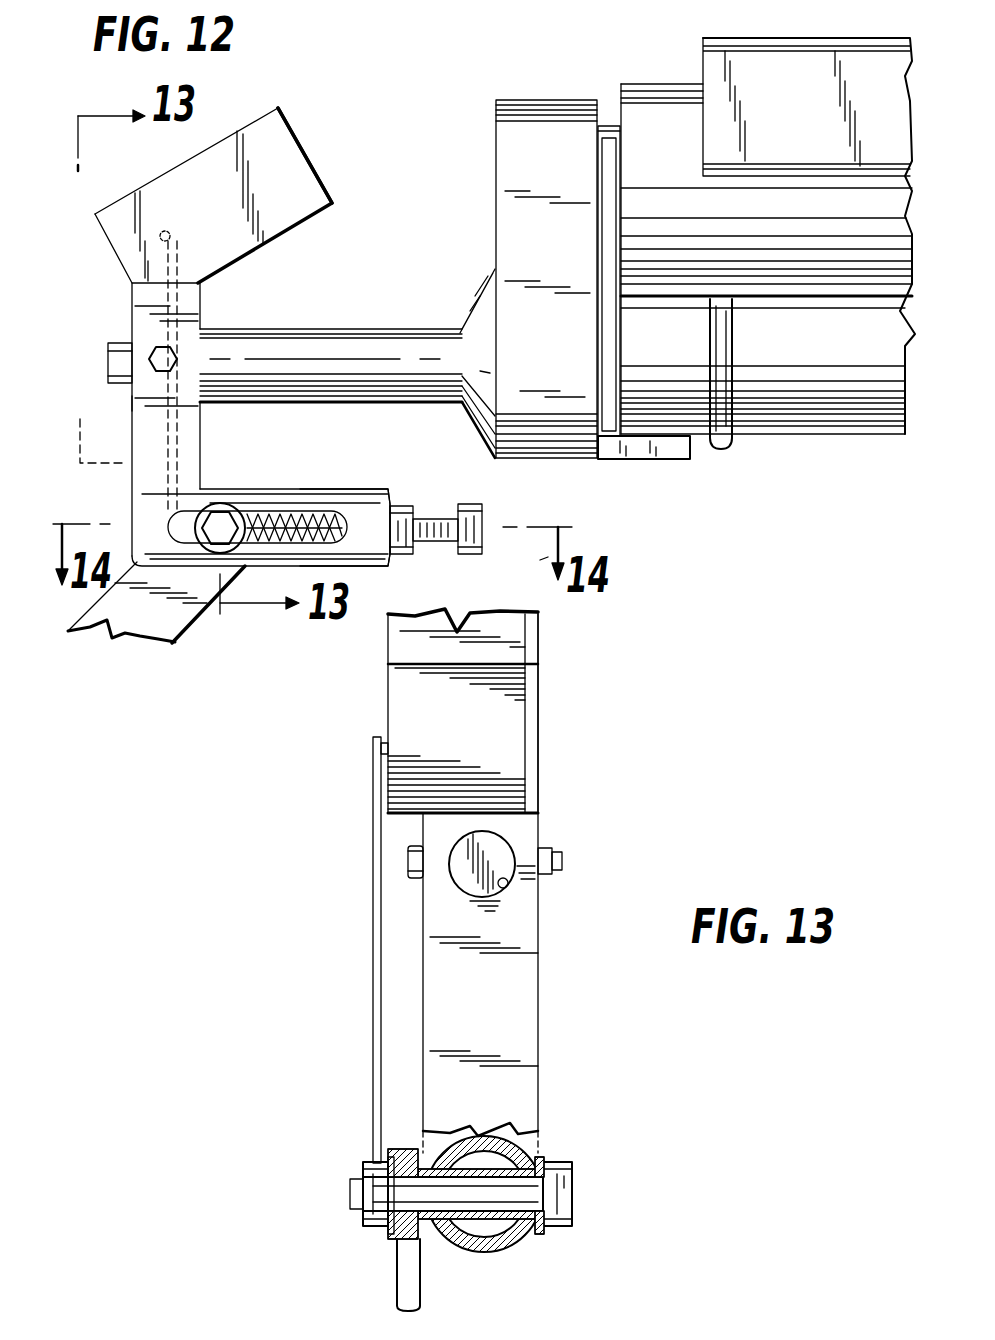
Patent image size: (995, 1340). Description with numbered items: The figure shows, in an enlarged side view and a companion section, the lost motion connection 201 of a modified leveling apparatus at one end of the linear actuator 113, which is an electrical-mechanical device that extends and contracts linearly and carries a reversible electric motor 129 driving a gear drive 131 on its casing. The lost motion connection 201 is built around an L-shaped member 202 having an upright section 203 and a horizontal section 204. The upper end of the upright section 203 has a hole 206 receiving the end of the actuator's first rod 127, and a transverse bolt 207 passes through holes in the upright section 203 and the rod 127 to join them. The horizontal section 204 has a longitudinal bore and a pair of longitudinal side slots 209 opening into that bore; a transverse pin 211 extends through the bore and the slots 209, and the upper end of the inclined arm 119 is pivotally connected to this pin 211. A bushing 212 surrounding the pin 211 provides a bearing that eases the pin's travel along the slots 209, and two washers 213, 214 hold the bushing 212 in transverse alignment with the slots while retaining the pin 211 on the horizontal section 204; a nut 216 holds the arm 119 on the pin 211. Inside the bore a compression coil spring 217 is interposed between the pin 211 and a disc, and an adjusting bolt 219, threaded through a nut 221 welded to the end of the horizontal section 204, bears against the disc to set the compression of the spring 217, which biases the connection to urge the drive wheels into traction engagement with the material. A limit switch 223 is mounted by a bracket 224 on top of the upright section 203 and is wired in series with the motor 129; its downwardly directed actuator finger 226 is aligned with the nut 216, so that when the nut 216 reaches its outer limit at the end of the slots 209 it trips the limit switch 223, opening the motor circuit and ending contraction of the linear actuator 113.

In FIG. 12, the linear actuator 113 is at (763, 374).
In FIG. 12, the arm 119 is at (153, 623).
In FIG. 13, the arm 119 is at (398, 1271).
In FIG. 12, the first rod 127 is at (375, 342).
In FIG. 13, the first rod 127 is at (495, 848).
In FIG. 12, the reversible electric motor 129 is at (768, 236).
In FIG. 12, the gear drive 131 is at (540, 107).
In FIG. 12, the lost motion connection 201 is at (112, 400).
In FIG. 12, the L-shaped member 202 is at (147, 495).
In FIG. 12, the upright section 203 is at (195, 425).
In FIG. 13, the upright section 203 is at (522, 993).
In FIG. 12, the horizontal section 204 is at (367, 495).
In FIG. 13, the hole 206 is at (505, 887).
In FIG. 12, the transverse bolt 207 is at (173, 352).
In FIG. 13, the transverse bolt 207 is at (552, 858).
In FIG. 12, the longitudinal side slots 209 is at (322, 515).
In FIG. 13, the longitudinal side slots 209 is at (517, 1208).
In FIG. 12, the transverse pin 211 is at (225, 525).
In FIG. 13, the transverse pin 211 is at (556, 1180).
In FIG. 13, the bushing 212 is at (486, 1165).
In FIG. 13, the washer 213 is at (420, 1160).
In FIG. 13, the washer 214 is at (532, 1152).
In FIG. 13, the nut 216 is at (356, 1220).
In FIG. 12, the compression coil spring 217 is at (317, 533).
In FIG. 12, the adjusting bolt 219 is at (482, 507).
In FIG. 12, the nut 221 is at (413, 505).
In FIG. 12, the limit switch 223 is at (278, 107).
In FIG. 13, the limit switch 223 is at (463, 711).
In FIG. 12, the bracket 224 is at (283, 162).
In FIG. 13, the bracket 224 is at (535, 740).
In FIG. 12, the actuator finger 226 is at (177, 447).
In FIG. 13, the actuator finger 226 is at (373, 1100).